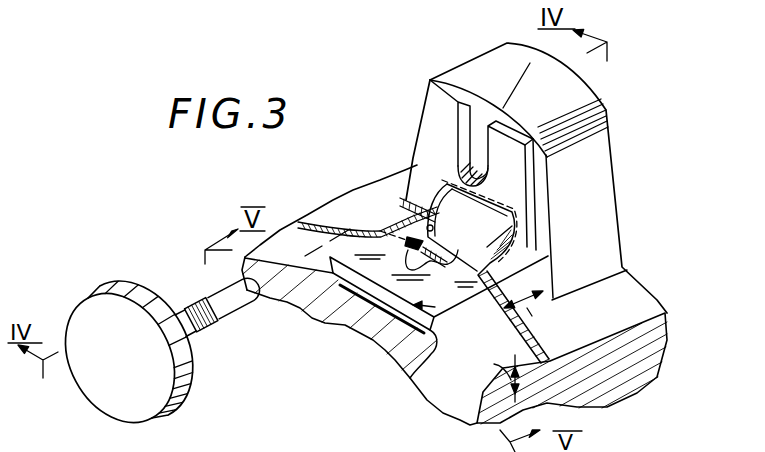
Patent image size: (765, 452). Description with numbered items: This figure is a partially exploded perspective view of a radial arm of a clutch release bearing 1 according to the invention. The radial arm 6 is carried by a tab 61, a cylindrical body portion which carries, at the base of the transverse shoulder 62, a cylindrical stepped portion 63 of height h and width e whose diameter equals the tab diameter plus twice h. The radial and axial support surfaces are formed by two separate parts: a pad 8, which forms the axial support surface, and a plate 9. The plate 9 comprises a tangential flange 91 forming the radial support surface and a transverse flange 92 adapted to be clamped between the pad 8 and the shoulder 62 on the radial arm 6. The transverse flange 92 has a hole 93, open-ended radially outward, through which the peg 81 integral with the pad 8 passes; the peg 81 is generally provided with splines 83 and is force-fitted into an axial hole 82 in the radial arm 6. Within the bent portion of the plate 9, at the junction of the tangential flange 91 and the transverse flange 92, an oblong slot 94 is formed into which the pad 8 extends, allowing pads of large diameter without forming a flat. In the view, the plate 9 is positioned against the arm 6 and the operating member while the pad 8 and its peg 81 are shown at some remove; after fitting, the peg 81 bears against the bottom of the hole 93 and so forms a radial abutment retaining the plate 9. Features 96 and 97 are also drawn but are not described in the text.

The clutch release bearing 1 is at (672, 283).
The radial arm 6 is at (618, 200).
The pad 8 is at (93, 310).
The plate 9 is at (340, 285).
The tab 61 is at (484, 337).
The shoulder 62 is at (502, 112).
The cylindrical stepped portion 63 is at (353, 200).
The peg 81 is at (227, 316).
The axial hole 82 is at (473, 150).
The splines 83 is at (200, 313).
The tangential flange 91 is at (388, 364).
The transverse flange 92 is at (534, 197).
The hole 93 is at (477, 117).
The oblong slot 94 is at (485, 206).
The stop 96 is at (400, 205).
The edge 97 is at (516, 214).